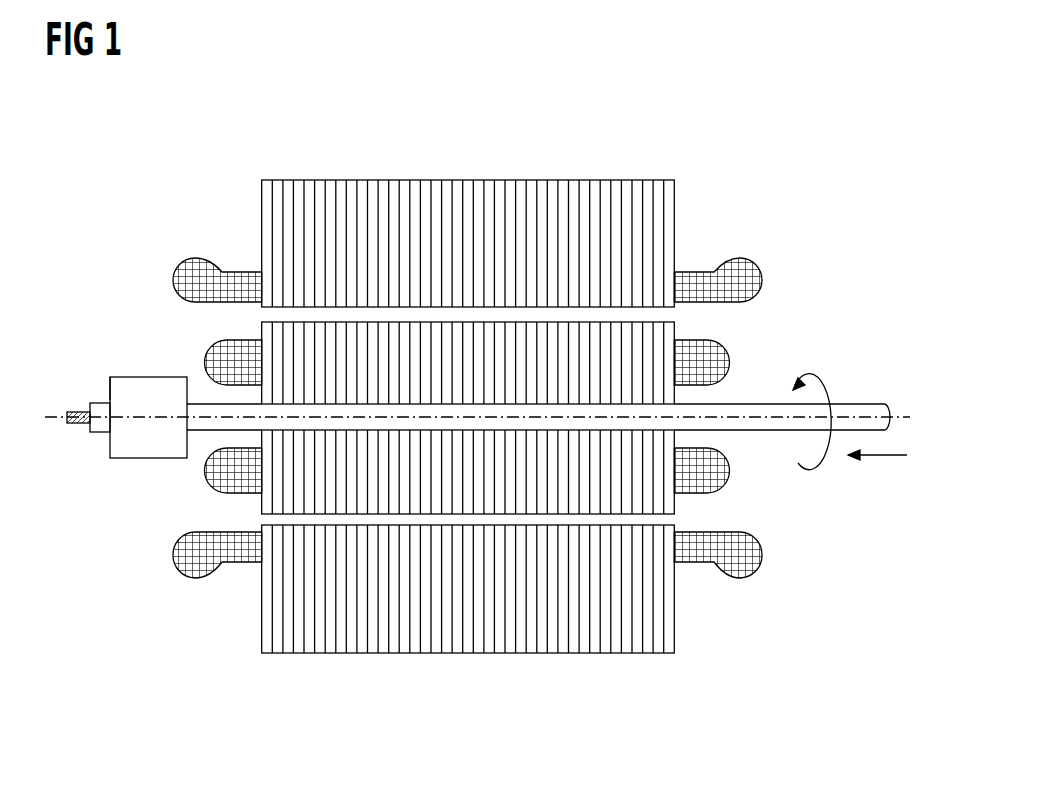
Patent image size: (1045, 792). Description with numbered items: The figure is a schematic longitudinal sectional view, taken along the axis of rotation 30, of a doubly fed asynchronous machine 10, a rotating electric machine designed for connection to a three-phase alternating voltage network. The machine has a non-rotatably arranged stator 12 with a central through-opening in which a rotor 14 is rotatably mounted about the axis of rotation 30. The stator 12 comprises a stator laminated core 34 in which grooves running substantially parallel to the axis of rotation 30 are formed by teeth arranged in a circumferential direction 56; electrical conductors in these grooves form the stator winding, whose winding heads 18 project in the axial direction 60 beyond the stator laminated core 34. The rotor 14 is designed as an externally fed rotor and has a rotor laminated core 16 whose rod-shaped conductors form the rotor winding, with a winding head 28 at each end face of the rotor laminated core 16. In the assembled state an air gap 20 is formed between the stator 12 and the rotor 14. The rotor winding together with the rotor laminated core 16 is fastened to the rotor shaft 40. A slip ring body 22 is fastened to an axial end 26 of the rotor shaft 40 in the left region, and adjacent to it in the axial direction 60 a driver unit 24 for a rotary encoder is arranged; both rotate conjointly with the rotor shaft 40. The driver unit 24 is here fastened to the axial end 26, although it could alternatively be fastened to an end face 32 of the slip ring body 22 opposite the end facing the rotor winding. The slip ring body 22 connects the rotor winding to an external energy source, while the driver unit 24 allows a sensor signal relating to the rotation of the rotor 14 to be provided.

The doubly fed asynchronous machine 10 is at (713, 172).
The stator 12 is at (258, 212).
The rotor 14 is at (745, 333).
The rotor laminated core 16 is at (678, 505).
The winding heads 18 is at (190, 258).
The air gap 20 is at (531, 322).
The slip ring body 22 is at (116, 392).
The driver unit 24 is at (97, 437).
The axial end 26 is at (118, 375).
The winding head 28 is at (207, 355).
The axis of rotation 30 is at (895, 415).
The end face 32 is at (105, 445).
The stator laminated core 34 is at (362, 178).
The rotor shaft 40 is at (856, 403).
The circumferential direction 56 is at (828, 462).
The axial direction 60 is at (888, 455).